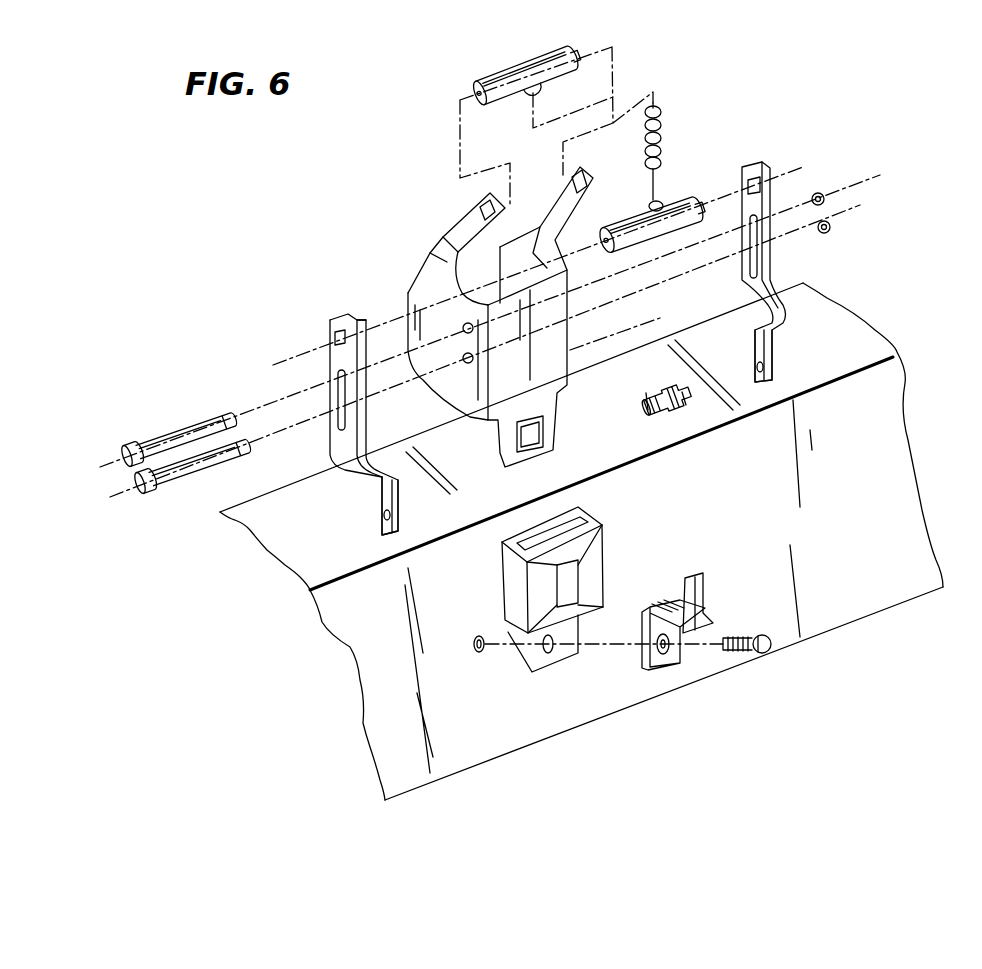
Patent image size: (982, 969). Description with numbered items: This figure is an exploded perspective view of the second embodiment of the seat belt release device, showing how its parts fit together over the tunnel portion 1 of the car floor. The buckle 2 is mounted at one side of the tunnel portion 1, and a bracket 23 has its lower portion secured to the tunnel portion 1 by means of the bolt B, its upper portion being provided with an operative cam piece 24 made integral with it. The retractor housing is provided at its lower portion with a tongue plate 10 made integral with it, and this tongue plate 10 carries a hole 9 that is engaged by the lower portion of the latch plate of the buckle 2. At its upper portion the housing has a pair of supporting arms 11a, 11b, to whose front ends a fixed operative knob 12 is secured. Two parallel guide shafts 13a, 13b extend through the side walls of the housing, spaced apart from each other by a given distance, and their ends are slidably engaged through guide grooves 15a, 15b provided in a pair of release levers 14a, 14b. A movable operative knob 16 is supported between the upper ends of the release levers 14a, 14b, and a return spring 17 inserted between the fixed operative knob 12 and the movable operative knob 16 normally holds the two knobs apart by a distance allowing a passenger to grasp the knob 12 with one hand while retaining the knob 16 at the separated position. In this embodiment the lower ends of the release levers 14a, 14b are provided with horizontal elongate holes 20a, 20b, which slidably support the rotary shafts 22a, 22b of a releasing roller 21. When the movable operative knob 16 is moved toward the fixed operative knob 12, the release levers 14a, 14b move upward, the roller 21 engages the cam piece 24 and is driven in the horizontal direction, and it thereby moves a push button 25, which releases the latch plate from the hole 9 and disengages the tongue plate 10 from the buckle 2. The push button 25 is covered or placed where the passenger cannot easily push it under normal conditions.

The tunnel portion of car floor 1 is at (897, 437).
The buckle 2 is at (515, 590).
The hole 9 is at (505, 468).
The tongue plate 10 is at (500, 413).
The supporting arm 11a is at (460, 237).
The supporting arm 11b is at (567, 178).
The fixed operative knob 12 is at (527, 70).
The guide shaft 13a is at (182, 473).
The guide shaft 13b is at (182, 438).
The release lever 14a is at (343, 453).
The release lever 14b is at (780, 283).
The guide groove 15a is at (342, 420).
The guide groove 15b is at (747, 265).
The movable operative knob 16 is at (668, 198).
The return spring 17 is at (660, 128).
The horizontal elongate hole 20a is at (399, 523).
The horizontal elongate hole 20b is at (773, 370).
The releasing roller 21 is at (663, 407).
The rotary shaft 22a is at (642, 407).
The rotary shaft 22b is at (680, 397).
The bracket 23 is at (698, 623).
The operative cam piece 24 is at (697, 578).
The push button 25 is at (573, 588).
The bolt B is at (750, 650).